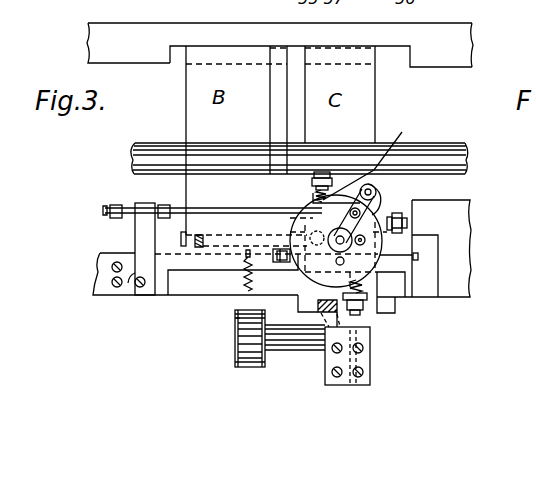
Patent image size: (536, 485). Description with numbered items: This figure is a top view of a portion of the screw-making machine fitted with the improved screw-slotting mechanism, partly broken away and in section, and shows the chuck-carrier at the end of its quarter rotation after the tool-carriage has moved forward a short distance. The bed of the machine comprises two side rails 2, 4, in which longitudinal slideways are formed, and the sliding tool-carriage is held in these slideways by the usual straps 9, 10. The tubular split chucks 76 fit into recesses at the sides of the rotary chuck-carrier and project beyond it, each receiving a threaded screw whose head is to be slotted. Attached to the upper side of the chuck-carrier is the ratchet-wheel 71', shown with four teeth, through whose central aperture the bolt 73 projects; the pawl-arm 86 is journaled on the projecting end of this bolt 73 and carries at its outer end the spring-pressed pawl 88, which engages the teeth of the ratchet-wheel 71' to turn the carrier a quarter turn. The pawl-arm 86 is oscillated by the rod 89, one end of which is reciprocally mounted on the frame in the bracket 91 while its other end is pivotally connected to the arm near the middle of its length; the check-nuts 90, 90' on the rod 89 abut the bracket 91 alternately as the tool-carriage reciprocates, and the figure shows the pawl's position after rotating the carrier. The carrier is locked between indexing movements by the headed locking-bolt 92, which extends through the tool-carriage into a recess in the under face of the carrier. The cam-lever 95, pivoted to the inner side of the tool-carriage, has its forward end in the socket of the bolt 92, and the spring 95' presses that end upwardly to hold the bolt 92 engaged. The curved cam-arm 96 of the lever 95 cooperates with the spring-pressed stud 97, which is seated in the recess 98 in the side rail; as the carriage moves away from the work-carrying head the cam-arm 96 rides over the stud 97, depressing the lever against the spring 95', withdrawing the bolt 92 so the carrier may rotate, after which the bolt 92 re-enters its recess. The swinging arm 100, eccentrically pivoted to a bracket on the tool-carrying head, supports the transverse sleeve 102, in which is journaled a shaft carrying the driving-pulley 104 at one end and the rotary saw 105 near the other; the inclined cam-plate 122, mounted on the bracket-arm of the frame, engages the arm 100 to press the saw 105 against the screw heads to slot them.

The strap 10 is at (209, 31).
The side rail 4 is at (148, 52).
The side rail 2 is at (93, 276).
The strap 9 is at (206, 286).
The rod 89 is at (233, 208).
The check-nut 90 is at (111, 196).
The check-nut 90' is at (171, 199).
The bracket 91 is at (135, 224).
The cam-lever 95 is at (160, 285).
The spring 95' is at (246, 245).
The cam-arm 96 is at (212, 248).
The spring-pressed stud 97 is at (247, 256).
The recess 98 is at (237, 312).
The tubular split chuck 76 is at (325, 168).
The locking-bolt 92 is at (313, 257).
The pawl-arm 86 is at (345, 242).
The spring-pressed pawl 88 is at (377, 205).
The ratchet-wheel 71' is at (380, 162).
The bolt 73 is at (345, 238).
The rotary saw 105 is at (367, 314).
The cam-plate 122 is at (368, 322).
The swinging arm 100 is at (322, 320).
The transverse sleeve 102 is at (315, 335).
The driving-pulley 104 is at (247, 367).